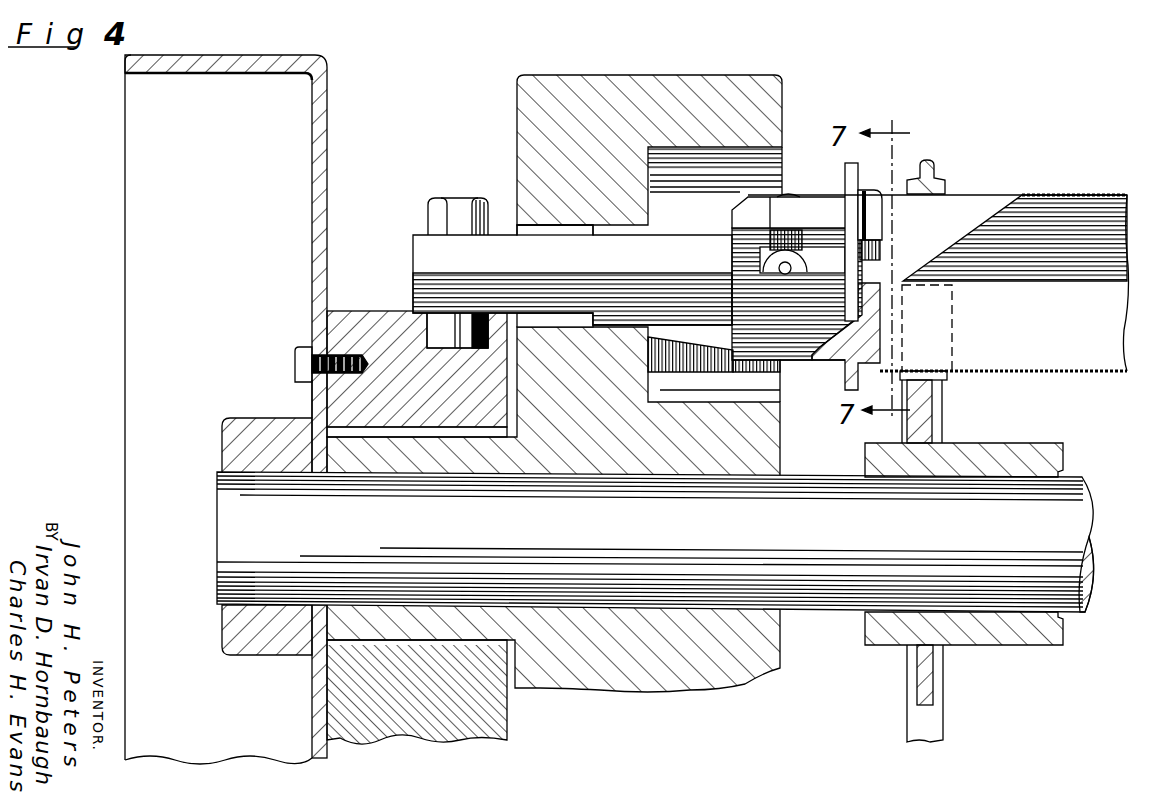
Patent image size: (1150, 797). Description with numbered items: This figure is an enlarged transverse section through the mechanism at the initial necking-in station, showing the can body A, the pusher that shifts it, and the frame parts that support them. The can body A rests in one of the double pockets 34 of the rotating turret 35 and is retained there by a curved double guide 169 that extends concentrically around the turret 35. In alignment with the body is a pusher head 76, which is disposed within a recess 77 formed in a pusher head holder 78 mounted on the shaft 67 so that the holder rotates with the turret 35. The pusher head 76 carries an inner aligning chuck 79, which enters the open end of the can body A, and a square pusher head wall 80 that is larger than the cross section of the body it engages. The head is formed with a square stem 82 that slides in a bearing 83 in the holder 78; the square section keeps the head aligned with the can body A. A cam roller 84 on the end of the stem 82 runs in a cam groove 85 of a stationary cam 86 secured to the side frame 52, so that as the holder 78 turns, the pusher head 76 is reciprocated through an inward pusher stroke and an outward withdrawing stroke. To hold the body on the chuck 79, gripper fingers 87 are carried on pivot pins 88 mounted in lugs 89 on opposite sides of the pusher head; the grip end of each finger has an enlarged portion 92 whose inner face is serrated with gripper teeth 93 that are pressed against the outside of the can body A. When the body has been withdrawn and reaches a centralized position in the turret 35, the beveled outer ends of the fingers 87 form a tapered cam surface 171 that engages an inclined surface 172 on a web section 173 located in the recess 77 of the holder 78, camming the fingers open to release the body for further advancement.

The side frame 52 is at (226, 409).
The shaft 67 is at (655, 542).
The pusher head 76 is at (793, 350).
The recess 77 is at (700, 170).
The pusher head holder 78 is at (735, 655).
The inner aligning chuck 79 is at (875, 340).
The pusher head wall 80 is at (845, 380).
The square stem 82 is at (572, 275).
The bearing 83 is at (545, 222).
The cam roller 84 is at (457, 330).
The cam groove 85 is at (420, 330).
The stationary cam 86 is at (345, 325).
The gripper finger 87 is at (797, 211).
The pivot pin 88 is at (779, 268).
The lug 89 is at (800, 272).
The enlarged portion 92 is at (870, 200).
The gripper teeth 93 is at (868, 265).
The curved double guide 169 is at (938, 190).
The tapered cam surface 171 is at (753, 212).
The inclined surface 172 is at (714, 354).
The web section 173 is at (694, 374).
The double pocket 34 is at (957, 376).
The turret 35 is at (1015, 455).
The can body A is at (938, 283).